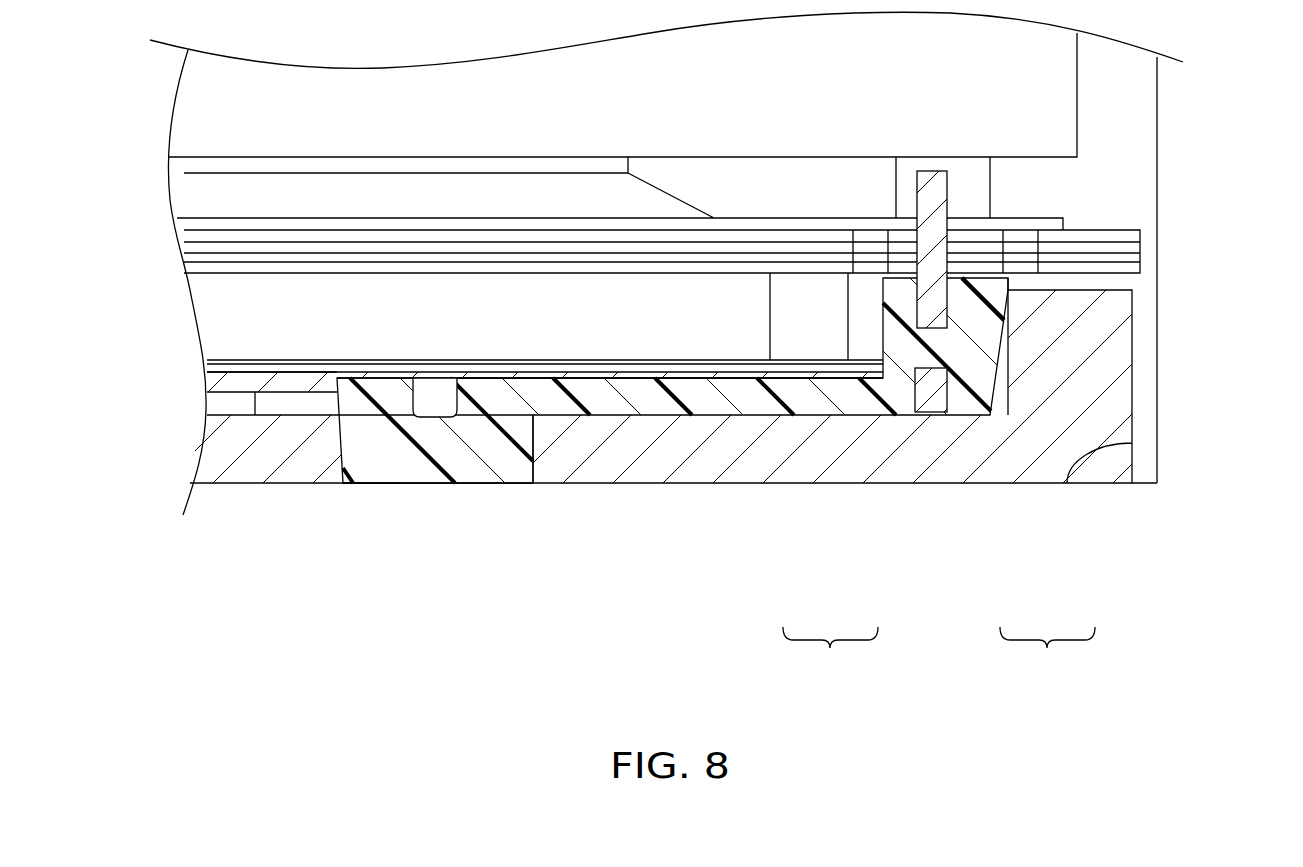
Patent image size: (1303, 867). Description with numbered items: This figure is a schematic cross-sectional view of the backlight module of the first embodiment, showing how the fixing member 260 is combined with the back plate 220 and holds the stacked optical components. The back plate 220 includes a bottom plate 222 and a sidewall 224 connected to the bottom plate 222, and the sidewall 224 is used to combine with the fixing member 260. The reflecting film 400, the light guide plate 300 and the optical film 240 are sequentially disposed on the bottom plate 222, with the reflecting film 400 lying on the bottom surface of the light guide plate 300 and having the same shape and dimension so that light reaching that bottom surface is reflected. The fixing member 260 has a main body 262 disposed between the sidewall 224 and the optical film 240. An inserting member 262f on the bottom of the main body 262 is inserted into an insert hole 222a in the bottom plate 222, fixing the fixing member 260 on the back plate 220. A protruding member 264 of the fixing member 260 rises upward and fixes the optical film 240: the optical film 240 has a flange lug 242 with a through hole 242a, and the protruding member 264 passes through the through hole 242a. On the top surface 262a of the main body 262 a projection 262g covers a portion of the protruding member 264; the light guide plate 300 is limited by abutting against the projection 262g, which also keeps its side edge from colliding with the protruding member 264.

The back plate 220 is at (1047, 655).
The bottom plate 222 is at (995, 440).
The insert hole 222a is at (537, 456).
The sidewall 224 is at (1107, 333).
The optical film 240 is at (1147, 243).
The flange lug 242 is at (1117, 260).
The through hole 242a is at (979, 253).
The fixing member 260 is at (830, 655).
The main body 262 is at (793, 397).
The top surface 262a is at (648, 382).
The inserting member 262f is at (433, 455).
The projection 262g is at (988, 320).
The protruding member 264 is at (928, 315).
The light guide plate 300 is at (617, 342).
The reflecting film 400 is at (703, 365).